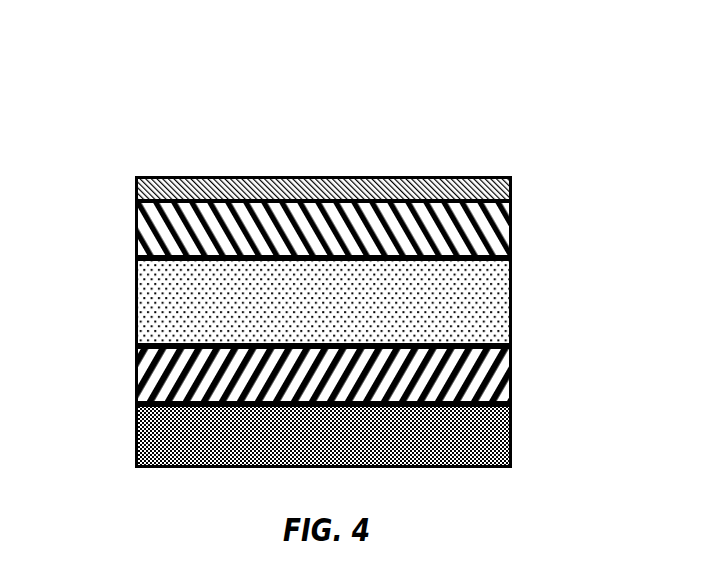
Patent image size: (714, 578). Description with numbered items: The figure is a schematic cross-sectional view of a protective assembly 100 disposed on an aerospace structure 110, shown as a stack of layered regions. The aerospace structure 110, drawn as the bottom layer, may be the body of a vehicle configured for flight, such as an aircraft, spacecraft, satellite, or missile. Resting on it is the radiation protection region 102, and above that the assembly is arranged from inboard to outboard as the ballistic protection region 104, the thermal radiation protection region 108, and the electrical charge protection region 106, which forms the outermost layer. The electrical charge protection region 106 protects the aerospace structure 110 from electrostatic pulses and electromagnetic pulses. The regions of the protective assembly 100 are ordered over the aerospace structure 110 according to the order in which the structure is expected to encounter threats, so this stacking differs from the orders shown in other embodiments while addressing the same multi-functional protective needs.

The protective assembly 100 is at (125, 153).
The radiation protection region 102 is at (513, 377).
The ballistic protection region 104 is at (513, 313).
The electrical charge protection region 106 is at (513, 183).
The thermal radiation protection region 108 is at (513, 228).
The aerospace structure 110 is at (513, 450).